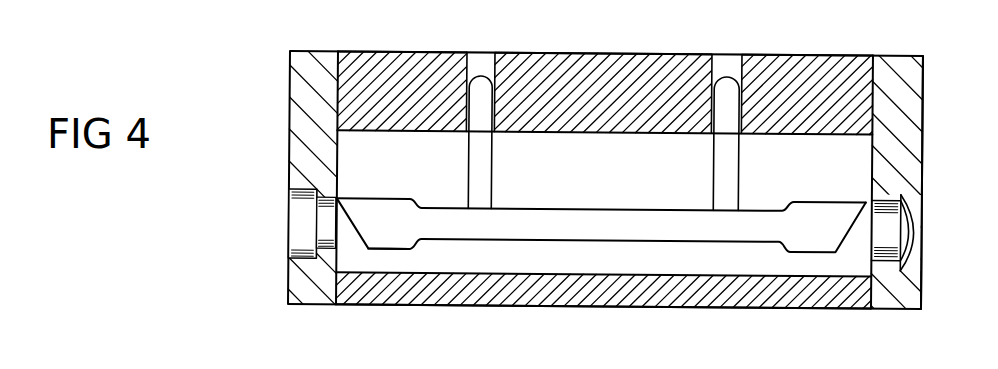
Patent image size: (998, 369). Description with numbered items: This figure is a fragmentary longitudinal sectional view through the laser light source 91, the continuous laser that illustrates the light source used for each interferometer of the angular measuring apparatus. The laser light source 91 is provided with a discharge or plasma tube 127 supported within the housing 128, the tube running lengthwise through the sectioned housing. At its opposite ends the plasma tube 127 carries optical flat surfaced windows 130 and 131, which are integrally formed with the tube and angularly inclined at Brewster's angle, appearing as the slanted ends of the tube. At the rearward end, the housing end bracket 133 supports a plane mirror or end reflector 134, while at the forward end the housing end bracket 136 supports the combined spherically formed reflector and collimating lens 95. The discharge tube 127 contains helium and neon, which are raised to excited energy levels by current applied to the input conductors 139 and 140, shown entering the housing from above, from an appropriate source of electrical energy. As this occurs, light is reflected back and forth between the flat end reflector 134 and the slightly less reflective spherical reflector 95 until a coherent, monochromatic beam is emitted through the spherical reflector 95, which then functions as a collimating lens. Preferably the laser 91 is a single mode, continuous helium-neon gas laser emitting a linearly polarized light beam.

The laser light source 91 is at (458, 312).
The plasma tube 127 is at (610, 220).
The housing 128 is at (866, 112).
The optical flat surfaced window 130 is at (358, 250).
The optical flat surfaced window 131 is at (852, 250).
The housing end bracket 133 is at (303, 120).
The end reflector 134 is at (302, 231).
The housing end bracket 136 is at (910, 163).
The combined spherically formed reflector and collimating lens 95 is at (915, 226).
The input conductor 139 is at (486, 47).
The input conductor 140 is at (733, 47).